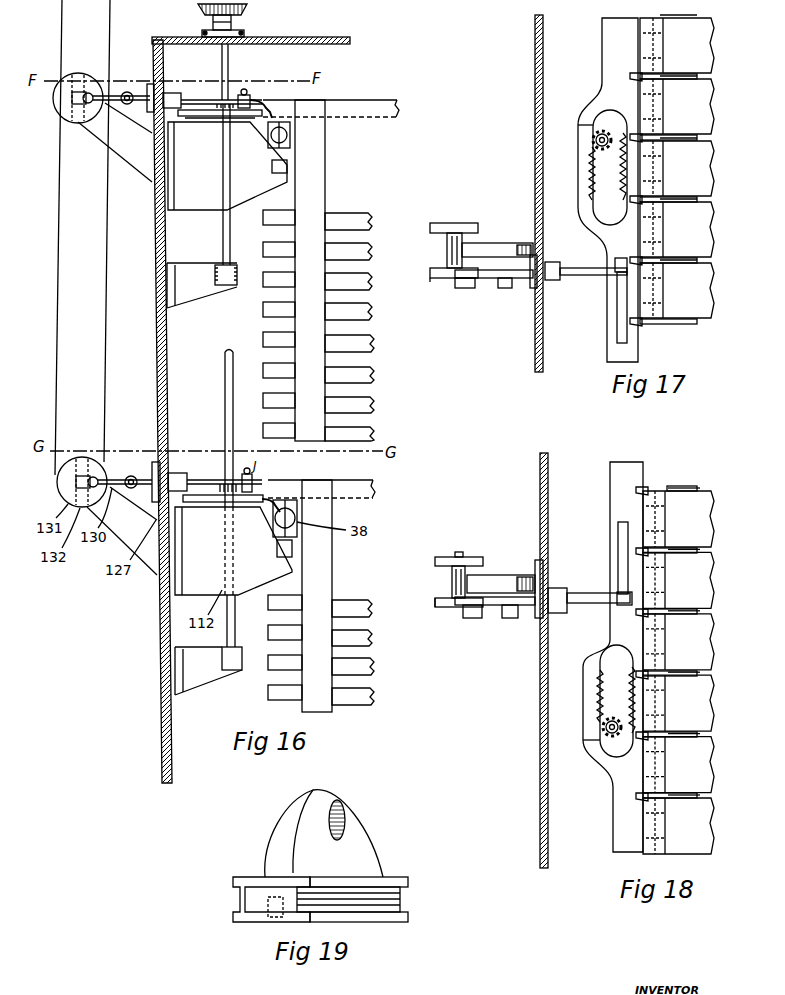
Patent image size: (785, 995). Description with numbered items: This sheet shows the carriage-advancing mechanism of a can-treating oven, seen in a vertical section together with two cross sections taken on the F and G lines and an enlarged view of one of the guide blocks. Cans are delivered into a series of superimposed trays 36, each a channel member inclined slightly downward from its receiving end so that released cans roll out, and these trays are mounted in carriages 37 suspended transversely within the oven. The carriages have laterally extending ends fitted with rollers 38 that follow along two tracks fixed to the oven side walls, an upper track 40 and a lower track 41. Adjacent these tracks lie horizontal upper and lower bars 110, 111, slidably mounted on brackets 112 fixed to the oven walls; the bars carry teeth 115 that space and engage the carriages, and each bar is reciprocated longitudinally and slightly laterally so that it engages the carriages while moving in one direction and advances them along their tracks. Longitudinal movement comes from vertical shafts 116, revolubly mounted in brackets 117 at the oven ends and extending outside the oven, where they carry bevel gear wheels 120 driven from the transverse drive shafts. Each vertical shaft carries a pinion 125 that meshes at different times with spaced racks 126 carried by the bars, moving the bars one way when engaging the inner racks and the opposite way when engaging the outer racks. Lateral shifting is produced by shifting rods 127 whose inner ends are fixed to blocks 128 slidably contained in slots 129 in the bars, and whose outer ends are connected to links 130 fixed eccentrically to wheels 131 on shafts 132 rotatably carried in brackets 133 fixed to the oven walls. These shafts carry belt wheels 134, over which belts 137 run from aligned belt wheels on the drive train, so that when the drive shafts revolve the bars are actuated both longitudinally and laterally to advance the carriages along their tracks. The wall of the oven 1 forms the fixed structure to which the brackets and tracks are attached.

In FIG. 16, the wall 1 is at (158, 397).
In FIG. 16, the trays 36 is at (356, 220).
In FIG. 17, the trays 36 is at (712, 282).
In FIG. 18, the trays 36 is at (705, 574).
In FIG. 16, the carriages 37 is at (356, 108).
In FIG. 17, the carriages 37 is at (697, 323).
In FIG. 18, the carriages 37 is at (690, 487).
In FIG. 16, the rollers 38 is at (290, 137).
In FIG. 16, the upper track 40 is at (287, 163).
In FIG. 16, the lower track 41 is at (292, 550).
In FIG. 16, the upper bar 110 is at (212, 116).
In FIG. 17, the upper bar 110 is at (612, 56).
In FIG. 16, the lower bar 111 is at (220, 510).
In FIG. 18, the lower bar 111 is at (612, 785).
In FIG. 16, the brackets 112 is at (244, 176).
In FIG. 16, the teeth 115 is at (272, 100).
In FIG. 17, the teeth 115 is at (645, 324).
In FIG. 18, the teeth 115 is at (645, 487).
In FIG. 16, the vertical shafts 116 is at (222, 232).
In FIG. 17, the vertical shafts 116 is at (593, 127).
In FIG. 18, the vertical shafts 116 is at (590, 748).
In FIG. 16, the brackets 117 is at (196, 287).
In FIG. 16, the bevel gear wheels 120 is at (247, 14).
In FIG. 17, the pinions 125 is at (592, 142).
In FIG. 18, the pinions 125 is at (604, 720).
In FIG. 17, the racks 126 is at (590, 170).
In FIG. 18, the racks 126 is at (630, 640).
In FIG. 16, the shifting rods 127 is at (204, 72).
In FIG. 17, the shifting rods 127 is at (582, 276).
In FIG. 18, the shifting rods 127 is at (595, 593).
In FIG. 17, the blocks 128 is at (615, 290).
In FIG. 18, the blocks 128 is at (624, 598).
In FIG. 19, the blocks 128 is at (360, 822).
In FIG. 17, the slots 129 is at (620, 340).
In FIG. 18, the slots 129 is at (618, 528).
In FIG. 16, the links 130 is at (112, 92).
In FIG. 17, the links 130 is at (487, 290).
In FIG. 18, the links 130 is at (492, 620).
In FIG. 16, the wheels 131 is at (68, 122).
In FIG. 17, the wheels 131 is at (440, 280).
In FIG. 18, the wheels 131 is at (446, 604).
In FIG. 16, the shafts 132 is at (78, 74).
In FIG. 18, the shafts 132 is at (462, 553).
In FIG. 16, the brackets 133 is at (130, 150).
In FIG. 17, the brackets 133 is at (495, 245).
In FIG. 18, the brackets 133 is at (480, 580).
In FIG. 17, the belt wheels 134 is at (455, 223).
In FIG. 18, the belt wheels 134 is at (452, 557).
In FIG. 16, the belts 137 is at (110, 25).